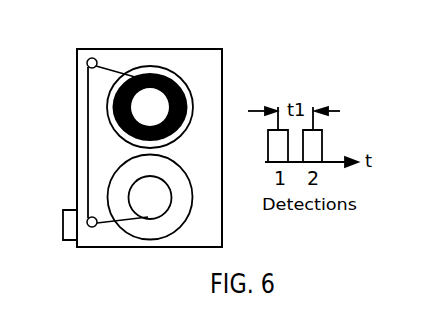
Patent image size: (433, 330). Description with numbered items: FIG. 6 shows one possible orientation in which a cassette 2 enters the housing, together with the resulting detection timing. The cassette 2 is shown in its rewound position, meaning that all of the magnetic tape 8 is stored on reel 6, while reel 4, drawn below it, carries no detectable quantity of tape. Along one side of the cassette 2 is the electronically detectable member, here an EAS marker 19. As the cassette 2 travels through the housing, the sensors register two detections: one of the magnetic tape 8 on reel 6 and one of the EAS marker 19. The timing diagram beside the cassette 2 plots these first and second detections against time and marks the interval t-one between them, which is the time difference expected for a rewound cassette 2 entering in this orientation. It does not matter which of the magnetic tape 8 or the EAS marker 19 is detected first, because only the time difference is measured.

The cassette 2 is at (193, 49).
The reel 4 is at (175, 163).
The reel 6 is at (185, 80).
The magnetic tape 8 is at (186, 108).
The EAS marker 19 is at (68, 223).